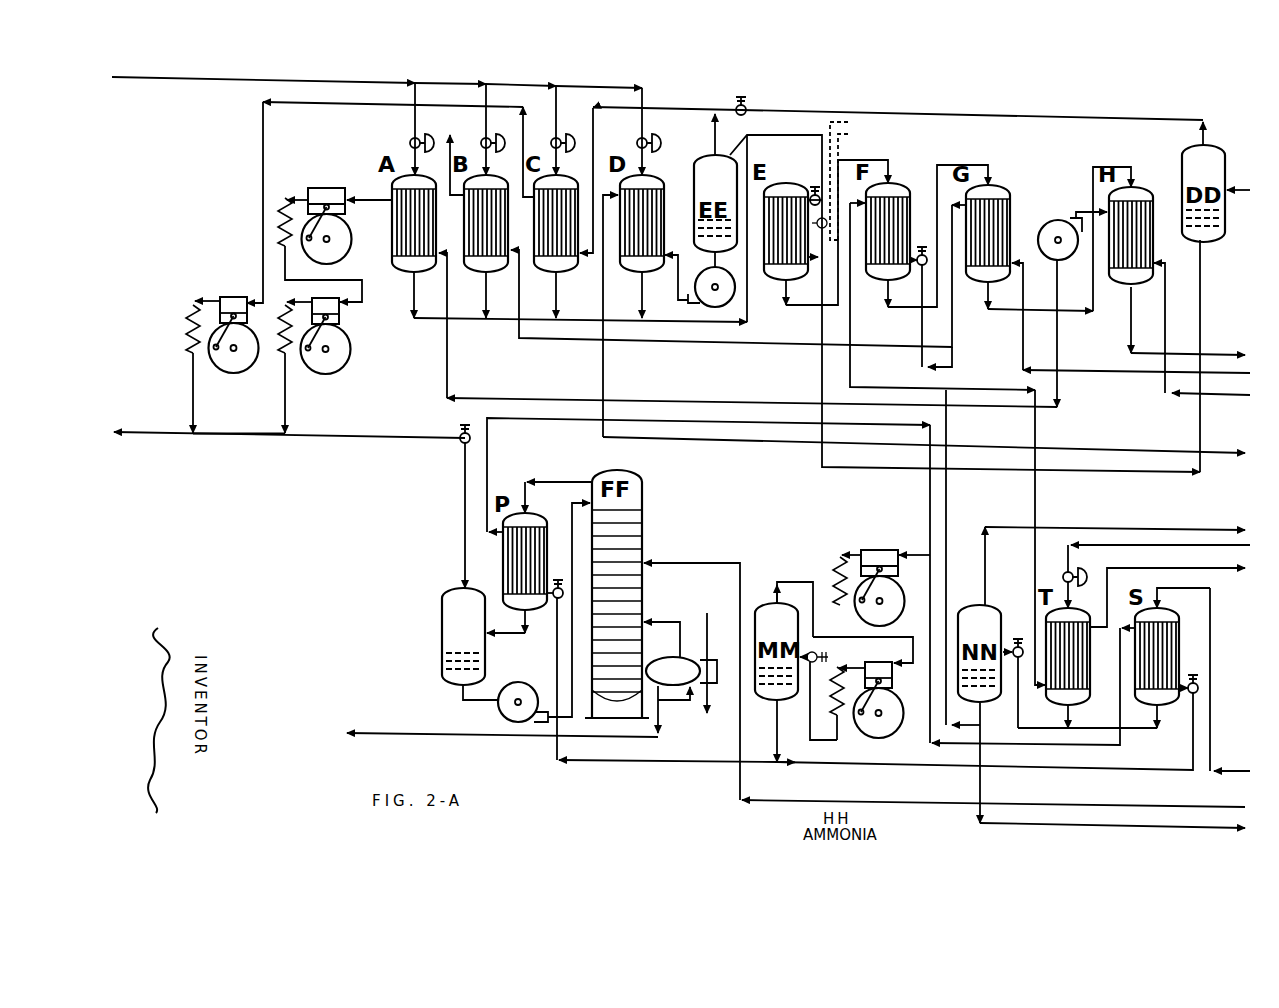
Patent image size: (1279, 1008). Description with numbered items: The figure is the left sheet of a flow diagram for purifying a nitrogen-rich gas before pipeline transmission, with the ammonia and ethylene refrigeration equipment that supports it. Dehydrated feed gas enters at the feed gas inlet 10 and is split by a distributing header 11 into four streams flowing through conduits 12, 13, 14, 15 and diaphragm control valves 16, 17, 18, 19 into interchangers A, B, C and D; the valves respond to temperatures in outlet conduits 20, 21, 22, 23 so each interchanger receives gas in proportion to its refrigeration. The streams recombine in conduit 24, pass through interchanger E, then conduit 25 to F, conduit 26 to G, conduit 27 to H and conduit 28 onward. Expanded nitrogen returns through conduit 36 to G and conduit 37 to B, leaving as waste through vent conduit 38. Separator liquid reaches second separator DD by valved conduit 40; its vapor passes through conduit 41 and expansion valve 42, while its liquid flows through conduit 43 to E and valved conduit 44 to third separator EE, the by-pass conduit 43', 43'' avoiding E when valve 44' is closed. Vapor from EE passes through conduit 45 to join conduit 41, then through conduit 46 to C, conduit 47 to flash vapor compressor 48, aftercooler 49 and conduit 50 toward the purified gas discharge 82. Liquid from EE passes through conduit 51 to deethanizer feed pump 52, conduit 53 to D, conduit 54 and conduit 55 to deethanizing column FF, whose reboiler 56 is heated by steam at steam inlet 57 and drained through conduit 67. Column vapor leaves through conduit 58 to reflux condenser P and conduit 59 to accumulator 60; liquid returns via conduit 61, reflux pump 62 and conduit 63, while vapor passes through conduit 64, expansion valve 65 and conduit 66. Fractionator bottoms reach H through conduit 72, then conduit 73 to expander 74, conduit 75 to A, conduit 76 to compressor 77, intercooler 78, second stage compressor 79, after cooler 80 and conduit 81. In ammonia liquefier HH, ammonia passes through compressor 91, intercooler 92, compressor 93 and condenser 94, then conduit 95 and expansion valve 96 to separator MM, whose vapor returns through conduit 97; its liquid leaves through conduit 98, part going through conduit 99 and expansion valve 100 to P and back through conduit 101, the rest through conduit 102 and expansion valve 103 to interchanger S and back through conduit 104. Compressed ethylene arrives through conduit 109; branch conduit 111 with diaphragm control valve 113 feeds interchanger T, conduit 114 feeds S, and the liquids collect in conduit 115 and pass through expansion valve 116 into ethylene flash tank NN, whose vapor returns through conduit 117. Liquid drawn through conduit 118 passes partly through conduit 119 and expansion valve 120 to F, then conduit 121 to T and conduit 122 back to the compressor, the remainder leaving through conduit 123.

The feed gas inlet 10 is at (257, 78).
The distributing header 11 is at (528, 77).
The conduit 12 is at (413, 132).
The conduit 13 is at (474, 129).
The conduit 14 is at (543, 130).
The conduit 15 is at (629, 131).
The diaphragm control valve 16 is at (409, 146).
The diaphragm control valve 17 is at (480, 146).
The diaphragm control valve 18 is at (550, 146).
The diaphragm control valve 19 is at (636, 146).
The outlet conduit 20 is at (401, 295).
The outlet conduit 21 is at (475, 295).
The outlet conduit 22 is at (542, 295).
The outlet conduit 23 is at (628, 295).
The conduit 24 is at (593, 232).
The conduit 25 is at (825, 224).
The conduit 26 is at (924, 229).
The conduit 27 is at (1054, 231).
The conduit 28 is at (1176, 321).
The conduit 36 is at (1123, 329).
The conduit 37 is at (731, 276).
The vent conduit 38 is at (450, 157).
The valved conduit 40 is at (1238, 180).
The conduit 41 is at (1172, 123).
The expansion valve 42 is at (898, 104).
The conduit 43 is at (999, 356).
The by-pass conduit 43' is at (855, 183).
The alternate line 43'' is at (844, 176).
The valved conduit 44 is at (776, 191).
The valve 44' is at (807, 187).
The conduit 45 is at (702, 134).
The conduit 46 is at (580, 180).
The conduit 47 is at (382, 202).
The flash vapor compressor 48 is at (228, 343).
The aftercooler 49 is at (195, 317).
The conduit 50 is at (178, 393).
The conduit 51 is at (699, 259).
The deethanizer feed pump 52 is at (714, 291).
The conduit 53 is at (668, 278).
The conduit 54 is at (911, 325).
The conduit 55 is at (944, 676).
The reboiler 56 is at (680, 661).
The steam inlet 57 is at (706, 655).
The conduit 58 is at (558, 490).
The conduit 59 is at (506, 622).
The accumulator 60 is at (463, 636).
The conduit 61 is at (480, 691).
The reflux pump 62 is at (521, 696).
The conduit 63 is at (569, 610).
The conduit 64 is at (449, 515).
The expansion valve 65 is at (452, 443).
The conduit 66 is at (239, 424).
The conduit 67 is at (502, 714).
The conduit 72 is at (1195, 329).
The conduit 73 is at (1087, 211).
The expander 74 is at (1058, 248).
The conduit 75 is at (739, 330).
The conduit 76 is at (369, 187).
The compressor 77 is at (323, 245).
The intercooler 78 is at (285, 210).
The second stage compressor 79 is at (320, 345).
The after cooler 80 is at (286, 317).
The conduit 81 is at (270, 393).
The purified gas discharge 82 is at (283, 426).
The compressor 91 is at (863, 641).
The intercooler 92 is at (860, 586).
The compressor 93 is at (871, 705).
The condenser 94 is at (829, 703).
The conduit 95 is at (811, 701).
The expansion valve 96 is at (824, 655).
The conduit 97 is at (791, 601).
The conduit 98 is at (763, 731).
The conduit 99 is at (653, 680).
The expansion valve 100 is at (550, 603).
The conduit 101 is at (708, 575).
The conduit 102 is at (985, 731).
The expansion valve 103 is at (1189, 671).
The conduit 104 is at (1020, 677).
The conduit 109 is at (1159, 550).
The branch conduit 111 is at (1086, 594).
The diaphragm control valve 113 is at (1061, 576).
The conduit 114 is at (1203, 668).
The conduit 115 is at (1087, 716).
The expansion valve 116 is at (1018, 672).
The conduit 117 is at (1098, 556).
The conduit 118 is at (996, 723).
The conduit 119 is at (935, 495).
The expansion valve 120 is at (924, 244).
The conduit 121 is at (934, 434).
The conduit 122 is at (1167, 589).
The conduit 123 is at (1093, 777).